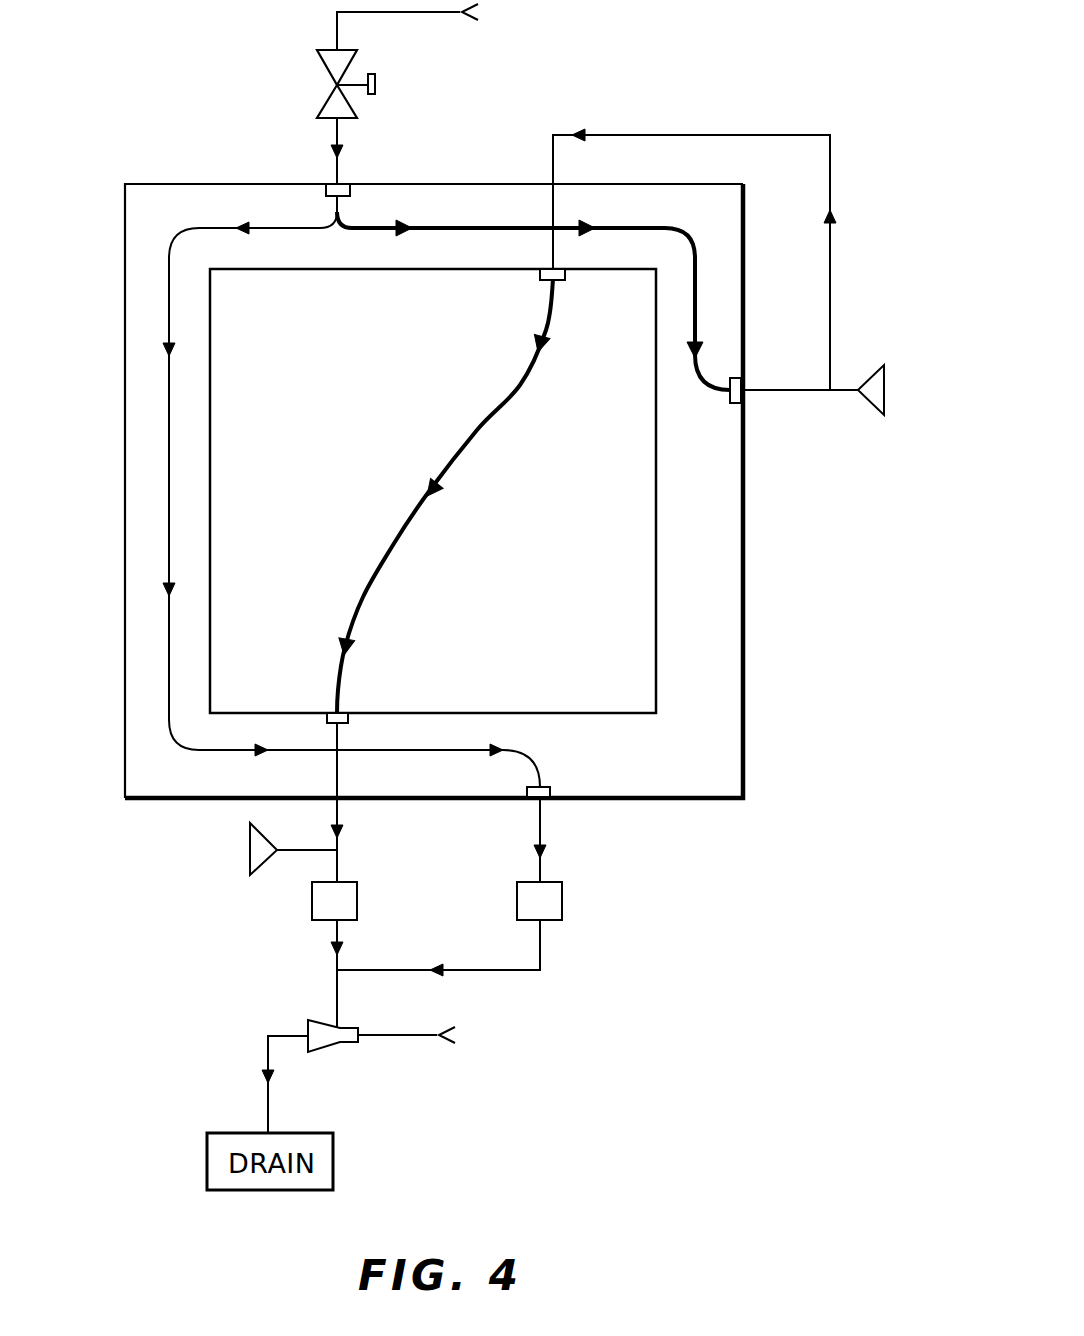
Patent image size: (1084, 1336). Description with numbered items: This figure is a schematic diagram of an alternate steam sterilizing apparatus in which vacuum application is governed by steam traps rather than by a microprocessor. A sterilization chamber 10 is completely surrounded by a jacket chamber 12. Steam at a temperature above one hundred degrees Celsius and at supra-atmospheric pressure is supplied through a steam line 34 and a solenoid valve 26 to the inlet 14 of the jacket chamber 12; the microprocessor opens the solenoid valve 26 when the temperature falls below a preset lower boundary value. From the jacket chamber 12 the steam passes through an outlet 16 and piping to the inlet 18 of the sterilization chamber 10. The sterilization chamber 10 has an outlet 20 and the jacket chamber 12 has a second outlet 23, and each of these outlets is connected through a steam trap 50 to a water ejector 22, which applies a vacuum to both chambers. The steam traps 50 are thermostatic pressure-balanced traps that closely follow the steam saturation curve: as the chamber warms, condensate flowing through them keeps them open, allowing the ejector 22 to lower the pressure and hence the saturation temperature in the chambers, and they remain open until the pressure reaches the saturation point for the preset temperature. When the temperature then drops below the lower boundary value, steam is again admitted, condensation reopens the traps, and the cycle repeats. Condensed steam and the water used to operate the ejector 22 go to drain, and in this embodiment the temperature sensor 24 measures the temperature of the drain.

The sterilization chamber 10 is at (637, 548).
The jacket chamber 12 is at (744, 653).
The inlet 14 is at (328, 184).
The outlet 16 is at (730, 404).
The inlet 18 is at (540, 280).
The outlet 20 is at (352, 712).
The water ejector 22 is at (337, 1054).
The second outlet 23 is at (552, 786).
The temperature sensor 24 is at (250, 857).
The solenoid valve 26 is at (318, 62).
The steam line 34 is at (341, 128).
The steam traps 50 is at (358, 891).